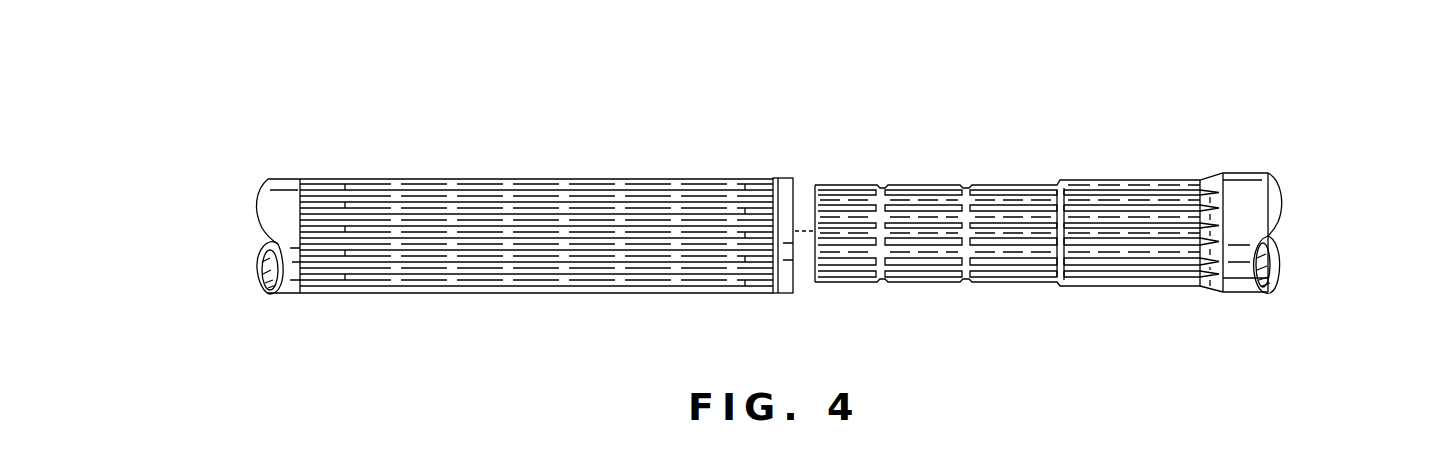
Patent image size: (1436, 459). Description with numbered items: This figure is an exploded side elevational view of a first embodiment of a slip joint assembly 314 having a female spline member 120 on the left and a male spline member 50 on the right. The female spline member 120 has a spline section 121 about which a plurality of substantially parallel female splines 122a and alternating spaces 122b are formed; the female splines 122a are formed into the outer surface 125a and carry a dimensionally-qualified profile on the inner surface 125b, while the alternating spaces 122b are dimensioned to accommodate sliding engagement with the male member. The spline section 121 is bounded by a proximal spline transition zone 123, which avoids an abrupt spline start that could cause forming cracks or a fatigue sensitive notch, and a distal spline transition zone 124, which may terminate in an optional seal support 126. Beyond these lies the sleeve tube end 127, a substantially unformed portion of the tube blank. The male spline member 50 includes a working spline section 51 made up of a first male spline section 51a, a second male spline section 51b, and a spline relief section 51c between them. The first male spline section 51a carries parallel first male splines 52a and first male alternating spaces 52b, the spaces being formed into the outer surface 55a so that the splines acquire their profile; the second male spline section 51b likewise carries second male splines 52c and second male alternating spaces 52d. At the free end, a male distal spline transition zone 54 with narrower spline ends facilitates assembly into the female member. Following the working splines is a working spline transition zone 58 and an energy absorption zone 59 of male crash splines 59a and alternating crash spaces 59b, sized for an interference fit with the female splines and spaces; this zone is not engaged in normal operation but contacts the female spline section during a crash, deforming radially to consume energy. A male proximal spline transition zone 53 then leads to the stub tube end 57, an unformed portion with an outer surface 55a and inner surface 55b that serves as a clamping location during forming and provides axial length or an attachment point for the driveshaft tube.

The male spline member 50 is at (1090, 127).
The working spline section 51 is at (1060, 289).
The first male spline section 51a is at (867, 188).
The second male spline section 51b is at (997, 188).
The spline relief section 51c is at (915, 185).
The first male splines 52a is at (828, 190).
The first male alternating spaces 52b is at (855, 195).
The second male splines 52c is at (996, 190).
The second male alternating spaces 52d is at (1028, 192).
The male proximal spline transition zone 53 is at (1212, 290).
The male distal spline transition zone 54 is at (817, 292).
The outer surface 55a is at (1242, 295).
The inner surface 55b is at (1285, 268).
The stub tube end 57 is at (1300, 210).
The working spline transition zone 58 is at (1062, 290).
The energy absorption zone 59 is at (1200, 289).
The male crash splines 59a is at (1150, 190).
The alternating crash spaces 59b is at (1200, 190).
The female spline member 120 is at (490, 140).
The spline section 121 is at (740, 297).
The female splines 122a is at (445, 230).
The alternating spaces 122b is at (540, 188).
The proximal spline transition zone 123 is at (318, 179).
The distal spline transition zone 124 is at (752, 179).
The outer surface 125a is at (280, 295).
The inner surface 125b is at (255, 268).
The seal support 126 is at (782, 178).
The sleeve tube end 127 is at (233, 205).
The slip joint assembly 314 is at (878, 97).